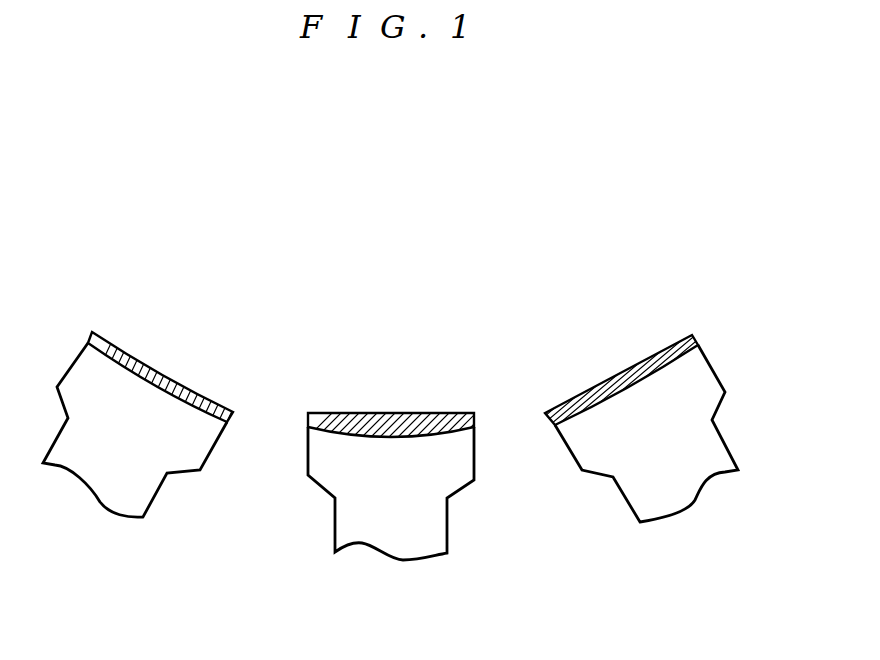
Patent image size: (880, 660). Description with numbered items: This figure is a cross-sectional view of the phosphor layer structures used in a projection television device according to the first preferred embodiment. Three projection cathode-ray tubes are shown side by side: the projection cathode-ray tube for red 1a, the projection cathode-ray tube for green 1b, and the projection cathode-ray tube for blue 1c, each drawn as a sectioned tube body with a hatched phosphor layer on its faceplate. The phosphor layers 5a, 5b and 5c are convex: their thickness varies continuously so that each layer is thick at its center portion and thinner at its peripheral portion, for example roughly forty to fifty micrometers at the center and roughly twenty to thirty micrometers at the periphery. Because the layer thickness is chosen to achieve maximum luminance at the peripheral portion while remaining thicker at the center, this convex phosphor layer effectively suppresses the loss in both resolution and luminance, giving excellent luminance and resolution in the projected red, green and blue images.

The projection cathode-ray tube for red 1a is at (178, 463).
The phosphor layer 5a is at (160, 368).
The projection cathode-ray tube for green 1b is at (455, 480).
The phosphor layer 5b is at (395, 413).
The projection cathode-ray tube for blue 1c is at (715, 395).
The phosphor layer 5c is at (618, 375).